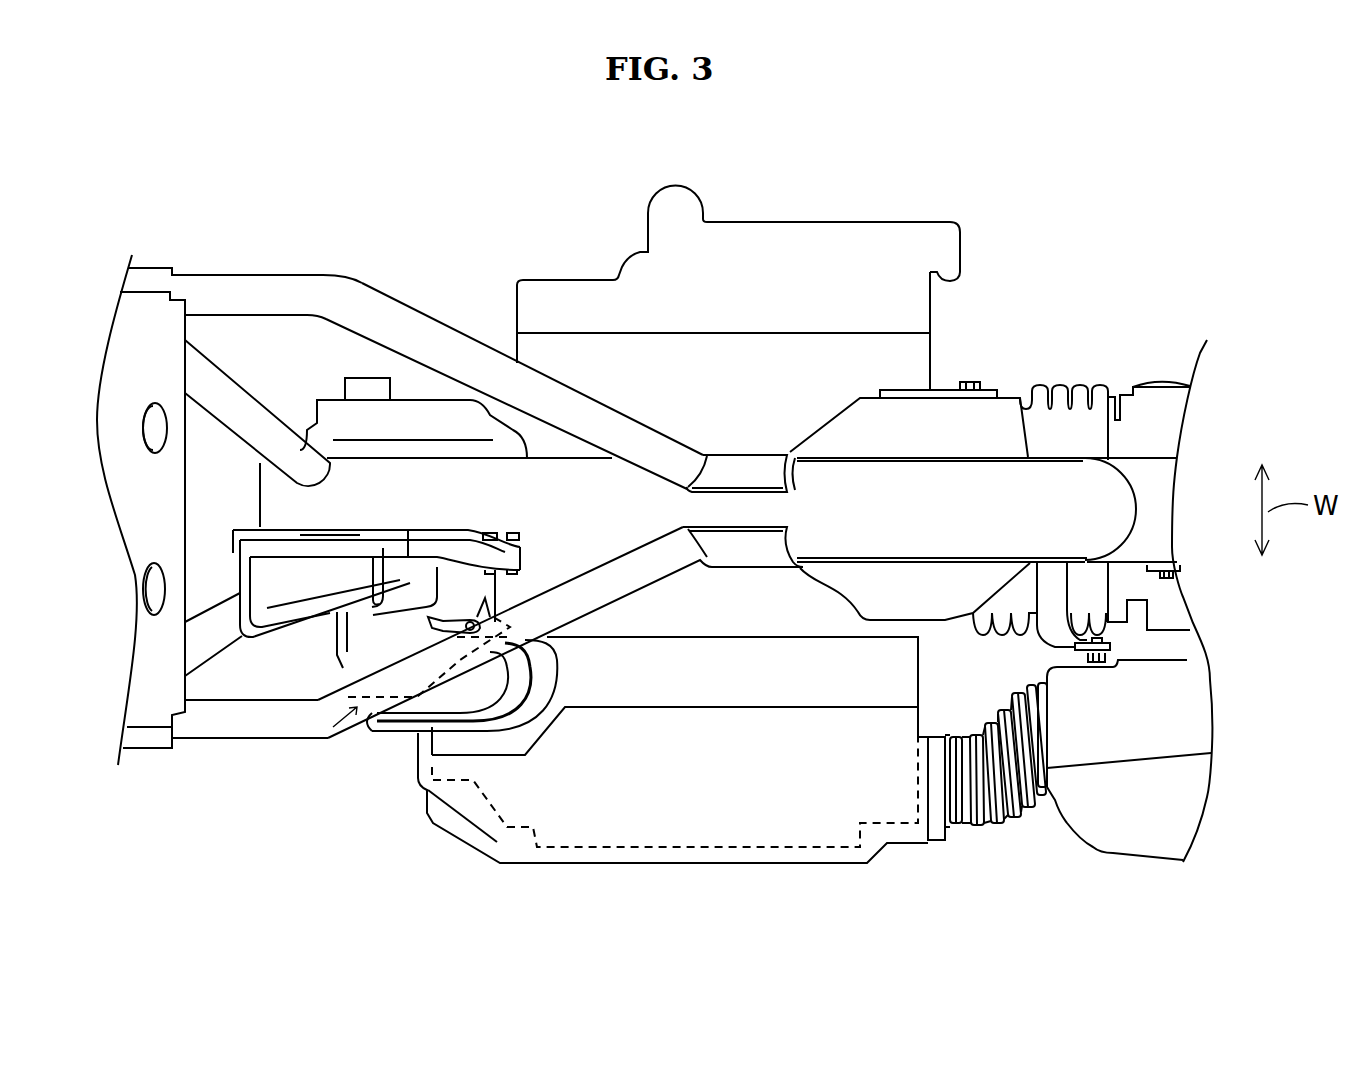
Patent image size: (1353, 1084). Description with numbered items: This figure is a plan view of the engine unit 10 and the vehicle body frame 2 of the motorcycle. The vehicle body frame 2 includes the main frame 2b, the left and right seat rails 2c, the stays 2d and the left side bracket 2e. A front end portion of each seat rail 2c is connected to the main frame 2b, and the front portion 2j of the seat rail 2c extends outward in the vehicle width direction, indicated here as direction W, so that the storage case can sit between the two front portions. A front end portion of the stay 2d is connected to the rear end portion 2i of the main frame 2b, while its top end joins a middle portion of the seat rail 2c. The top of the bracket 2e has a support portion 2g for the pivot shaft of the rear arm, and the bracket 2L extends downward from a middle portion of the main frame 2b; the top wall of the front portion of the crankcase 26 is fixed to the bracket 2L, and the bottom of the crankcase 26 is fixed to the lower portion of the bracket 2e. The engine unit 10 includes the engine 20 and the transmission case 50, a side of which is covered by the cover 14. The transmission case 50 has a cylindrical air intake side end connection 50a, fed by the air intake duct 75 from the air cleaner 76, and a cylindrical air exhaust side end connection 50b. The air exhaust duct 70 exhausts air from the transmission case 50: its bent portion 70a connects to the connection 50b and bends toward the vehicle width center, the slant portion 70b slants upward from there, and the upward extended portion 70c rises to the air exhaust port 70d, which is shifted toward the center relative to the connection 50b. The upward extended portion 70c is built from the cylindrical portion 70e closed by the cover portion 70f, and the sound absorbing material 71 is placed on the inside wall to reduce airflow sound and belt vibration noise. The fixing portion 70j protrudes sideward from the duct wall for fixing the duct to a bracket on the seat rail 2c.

The vehicle body frame 2 is at (748, 424).
The main frame 2b is at (1108, 513).
The seat rail 2c is at (257, 254).
The stay 2d is at (238, 393).
The bracket 2e is at (417, 420).
The support portion 2g is at (347, 388).
The rear end portion 2i is at (267, 497).
The front portion 2j is at (460, 355).
The bracket 2L is at (1002, 423).
The engine unit 10 is at (831, 201).
The cover 14 is at (903, 833).
The engine 20 is at (1060, 427).
The crankcase 26 is at (913, 355).
The transmission case 50 is at (713, 867).
The air intake side end connection 50a is at (940, 817).
The air exhaust side end connection 50b is at (547, 707).
The air exhaust duct 70 is at (343, 720).
The bent portion 70a is at (407, 733).
The slant portion 70b is at (337, 632).
The upward extended portion 70c is at (493, 462).
The air exhaust port 70d is at (250, 630).
The cylindrical portion 70e is at (400, 590).
The cover portion 70f is at (372, 537).
The fixing portion 70j is at (485, 613).
The sound absorbing material 71 is at (283, 550).
The air intake duct 75 is at (1003, 810).
The air cleaner 76 is at (1127, 847).